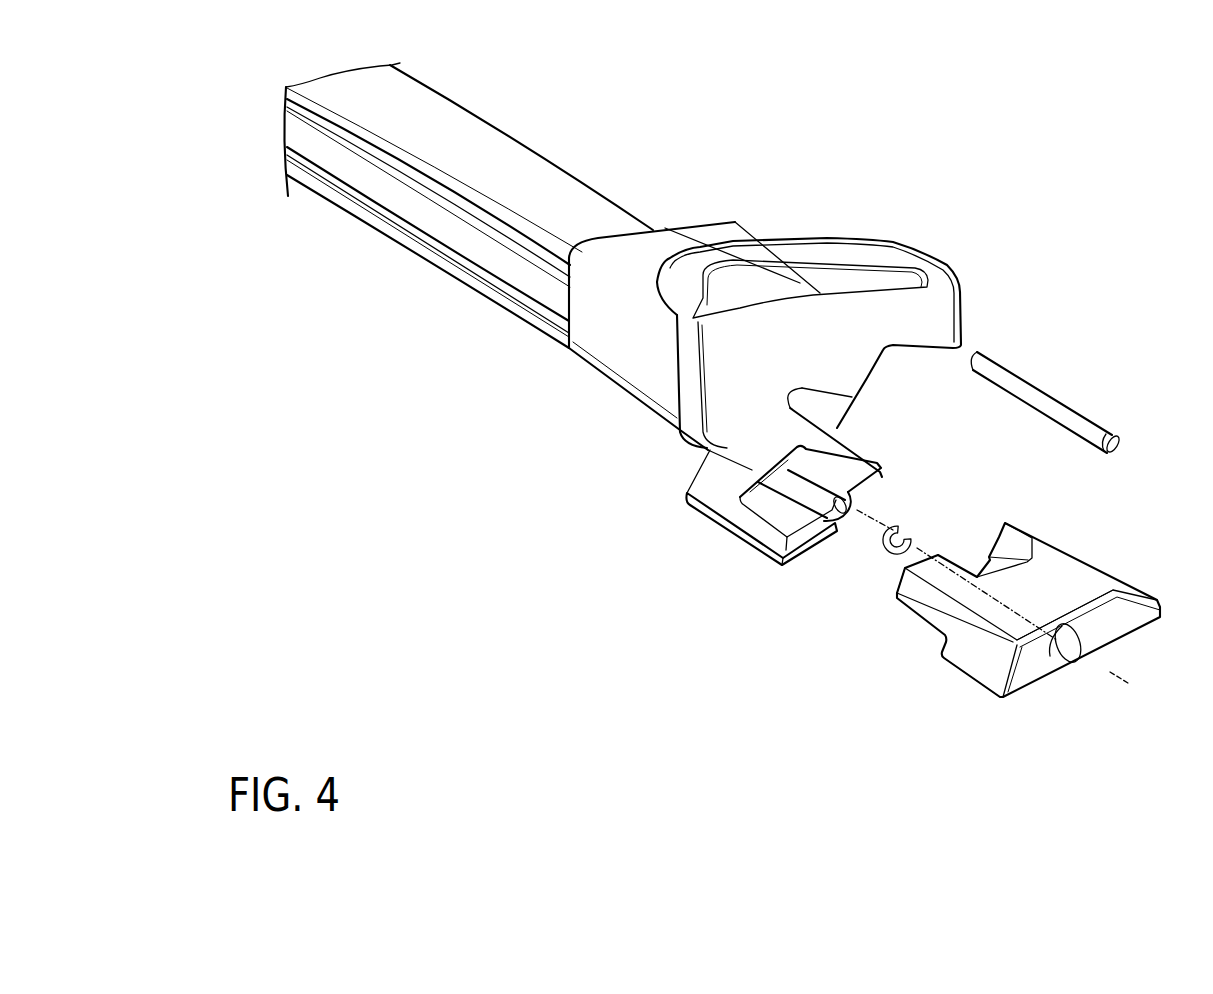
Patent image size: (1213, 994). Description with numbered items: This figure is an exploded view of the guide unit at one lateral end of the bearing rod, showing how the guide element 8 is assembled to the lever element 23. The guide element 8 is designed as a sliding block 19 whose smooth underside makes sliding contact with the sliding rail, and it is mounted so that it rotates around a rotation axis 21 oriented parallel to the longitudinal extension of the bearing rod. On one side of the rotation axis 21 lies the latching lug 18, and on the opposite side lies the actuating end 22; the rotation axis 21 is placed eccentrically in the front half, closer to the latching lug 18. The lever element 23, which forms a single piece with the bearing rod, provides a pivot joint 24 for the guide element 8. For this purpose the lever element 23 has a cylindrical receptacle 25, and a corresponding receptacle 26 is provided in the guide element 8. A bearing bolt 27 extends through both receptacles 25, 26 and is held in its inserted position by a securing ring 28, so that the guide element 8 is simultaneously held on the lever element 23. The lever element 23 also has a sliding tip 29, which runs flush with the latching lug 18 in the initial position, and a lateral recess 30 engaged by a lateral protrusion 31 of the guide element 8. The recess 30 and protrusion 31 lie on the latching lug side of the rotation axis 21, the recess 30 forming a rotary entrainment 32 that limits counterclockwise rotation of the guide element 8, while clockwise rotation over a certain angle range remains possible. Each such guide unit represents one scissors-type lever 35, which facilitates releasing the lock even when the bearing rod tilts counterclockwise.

The guide element 8 is at (1100, 547).
The latching lug 18 is at (962, 663).
The sliding block 19 is at (1115, 627).
The rotation axis 21 is at (1110, 672).
The actuating end 22 is at (1115, 582).
The lever element 23 is at (753, 473).
The pivot joint 24 is at (855, 498).
The cylindrical receptacle 25 is at (845, 497).
The receptacle 26 is at (1057, 643).
The bearing bolt 27 is at (1023, 389).
The securing ring 28 is at (910, 528).
The sliding tip 29 is at (697, 491).
The lateral recess 30 is at (807, 527).
The lateral protrusion 31 is at (912, 594).
The rotary entrainment 32 is at (763, 510).
The scissors-type lever 35 is at (660, 635).